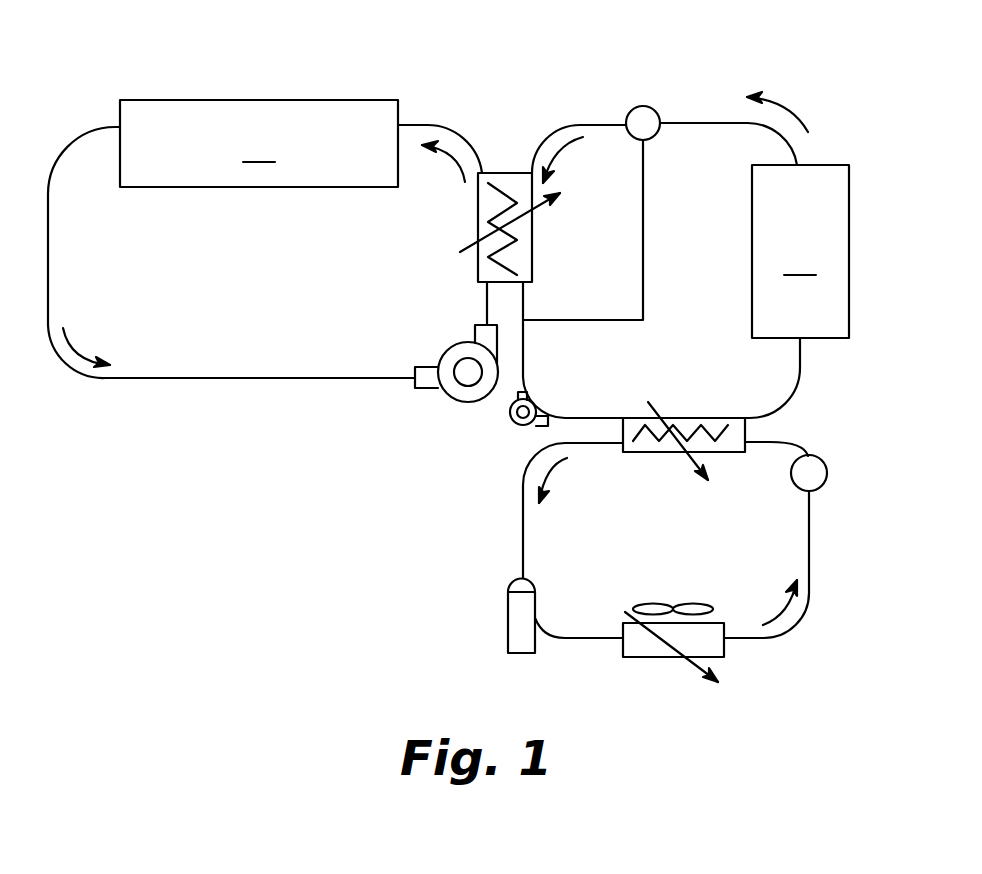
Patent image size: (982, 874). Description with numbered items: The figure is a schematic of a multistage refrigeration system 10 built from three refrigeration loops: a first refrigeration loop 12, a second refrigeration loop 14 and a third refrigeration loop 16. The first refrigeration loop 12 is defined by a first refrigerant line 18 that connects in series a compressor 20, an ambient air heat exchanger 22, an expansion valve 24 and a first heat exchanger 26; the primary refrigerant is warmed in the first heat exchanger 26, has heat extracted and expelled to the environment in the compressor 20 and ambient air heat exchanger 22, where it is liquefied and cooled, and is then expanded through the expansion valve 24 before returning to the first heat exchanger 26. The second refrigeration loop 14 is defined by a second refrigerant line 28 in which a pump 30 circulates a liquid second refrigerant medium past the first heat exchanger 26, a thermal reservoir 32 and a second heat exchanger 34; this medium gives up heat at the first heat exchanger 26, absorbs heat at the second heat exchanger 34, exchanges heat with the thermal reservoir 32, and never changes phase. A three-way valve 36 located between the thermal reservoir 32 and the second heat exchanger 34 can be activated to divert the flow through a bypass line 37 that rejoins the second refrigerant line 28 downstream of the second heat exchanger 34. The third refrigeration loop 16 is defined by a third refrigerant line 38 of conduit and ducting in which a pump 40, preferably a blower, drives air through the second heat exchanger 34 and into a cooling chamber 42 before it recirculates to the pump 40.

The multistage refrigeration system 10 is at (398, 510).
The first refrigeration loop 12 is at (817, 562).
The second refrigeration loop 14 is at (712, 80).
The third refrigeration loop 16 is at (67, 132).
The first refrigerant line 18 is at (522, 530).
The compressor 20 is at (515, 620).
The ambient air heat exchanger 22 is at (645, 657).
The expansion valve 24 is at (818, 470).
The first heat exchanger 26 is at (647, 452).
The second refrigerant line 28 is at (797, 385).
The pump 30 is at (520, 427).
The thermal reservoir 32 is at (800, 251).
The second heat exchanger 34 is at (478, 205).
The three-way valve 36 is at (645, 106).
The bypass line 37 is at (643, 240).
The third refrigerant line 38 is at (263, 380).
The pump 40 is at (458, 395).
The cooling chamber 42 is at (259, 143).